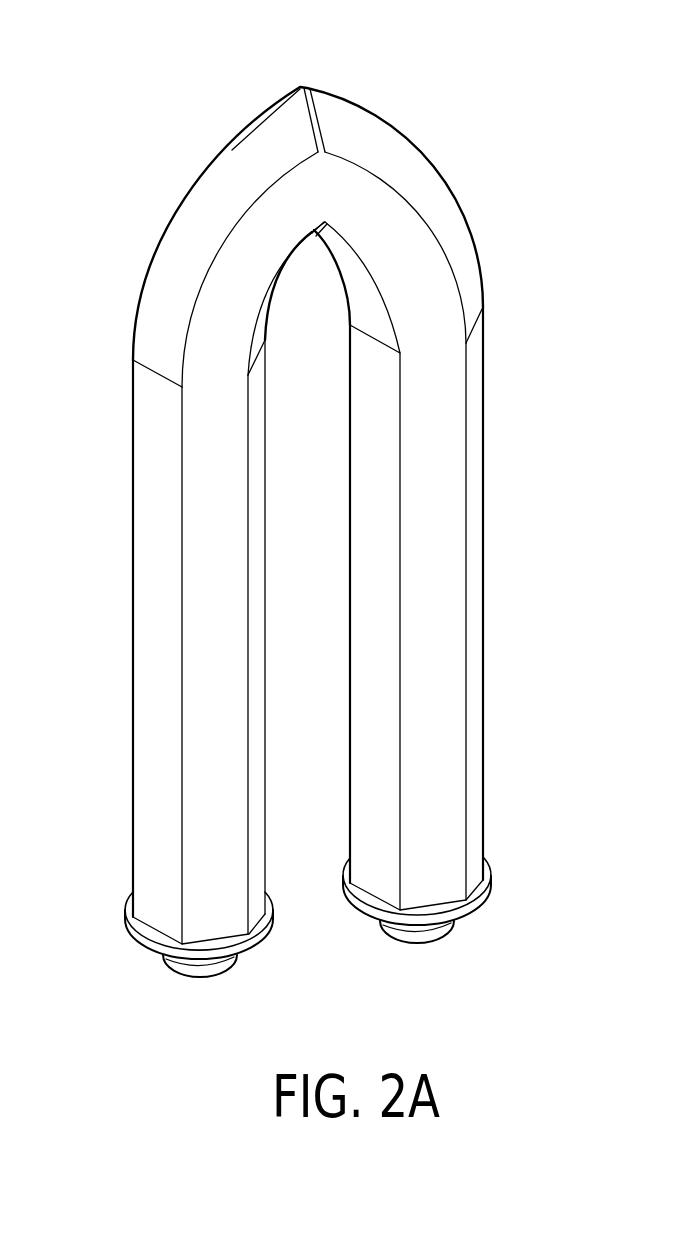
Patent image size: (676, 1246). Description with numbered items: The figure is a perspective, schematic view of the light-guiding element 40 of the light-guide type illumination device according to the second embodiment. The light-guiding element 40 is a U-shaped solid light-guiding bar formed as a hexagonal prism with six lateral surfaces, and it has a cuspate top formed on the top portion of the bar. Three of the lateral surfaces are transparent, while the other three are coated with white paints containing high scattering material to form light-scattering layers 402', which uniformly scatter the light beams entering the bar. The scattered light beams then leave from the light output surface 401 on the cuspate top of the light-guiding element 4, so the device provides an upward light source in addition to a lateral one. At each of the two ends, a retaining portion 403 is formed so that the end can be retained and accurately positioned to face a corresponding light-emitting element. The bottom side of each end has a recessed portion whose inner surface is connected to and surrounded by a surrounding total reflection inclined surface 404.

The light-guiding element 4 is at (407, 37).
The light-guiding element 40 is at (373, 131).
The light output surface 401 is at (235, 137).
The light-scattering layer 402' is at (461, 578).
The retaining portion 403 is at (150, 931).
The surrounding total reflection inclined surface 404 is at (210, 965).